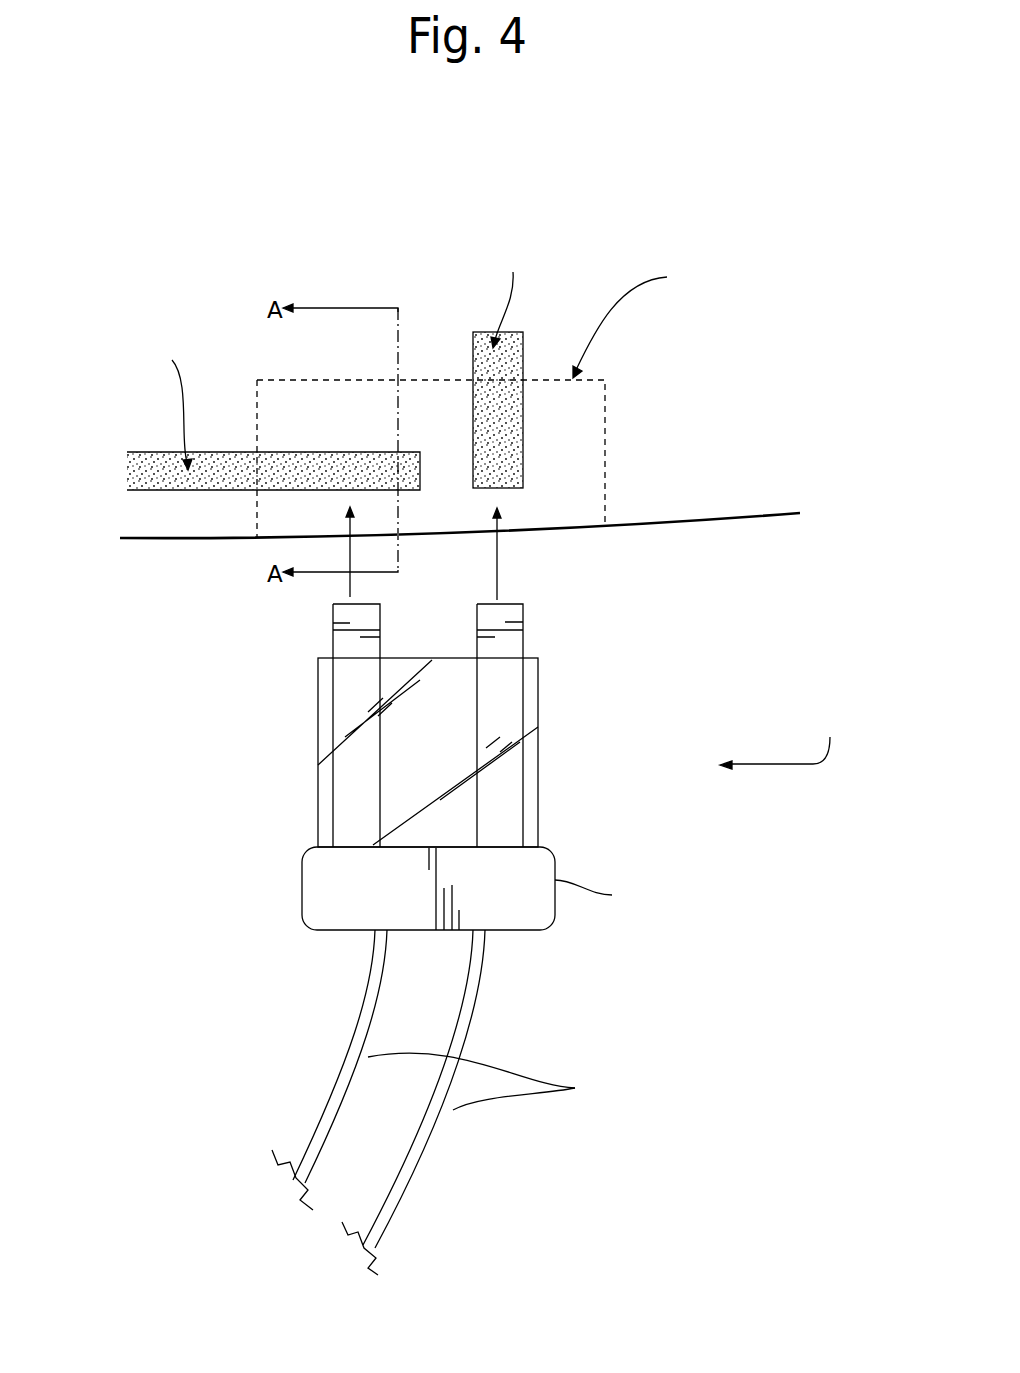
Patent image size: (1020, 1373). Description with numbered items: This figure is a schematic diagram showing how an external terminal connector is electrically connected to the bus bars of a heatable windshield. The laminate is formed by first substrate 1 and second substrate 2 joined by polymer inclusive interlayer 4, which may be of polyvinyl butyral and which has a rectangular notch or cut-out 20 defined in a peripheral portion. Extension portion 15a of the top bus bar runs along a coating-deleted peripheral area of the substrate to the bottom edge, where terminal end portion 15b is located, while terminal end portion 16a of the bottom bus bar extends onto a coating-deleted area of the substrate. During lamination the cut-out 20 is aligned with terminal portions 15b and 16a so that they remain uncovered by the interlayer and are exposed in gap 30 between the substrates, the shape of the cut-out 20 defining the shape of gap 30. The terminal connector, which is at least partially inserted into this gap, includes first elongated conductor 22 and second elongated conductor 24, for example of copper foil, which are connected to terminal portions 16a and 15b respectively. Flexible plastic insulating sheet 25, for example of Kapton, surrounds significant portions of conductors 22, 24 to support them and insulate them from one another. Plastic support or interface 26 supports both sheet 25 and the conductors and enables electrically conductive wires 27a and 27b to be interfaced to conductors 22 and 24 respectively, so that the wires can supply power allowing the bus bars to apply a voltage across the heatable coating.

The first substrate 1 is at (468, 532).
The second substrate 2 is at (468, 532).
The polymer inclusive interlayer 4 is at (683, 482).
The extension portion of top bus bar 15a is at (167, 465).
The terminal end portion of top bus bar 15b is at (410, 465).
The terminal end portion of bottom bus bar 16a is at (503, 467).
The notch or cut-out 20 is at (257, 505).
The first elongated conductor 22 is at (571, 725).
The second elongated conductor 24 is at (352, 687).
The flexible plastic insulating sheet 25 is at (443, 763).
The plastic support or interface 26 is at (330, 885).
The electrically conductive wire 27a is at (428, 1163).
The electrically conductive wire 27b is at (373, 1017).
The gap 30 is at (562, 485).